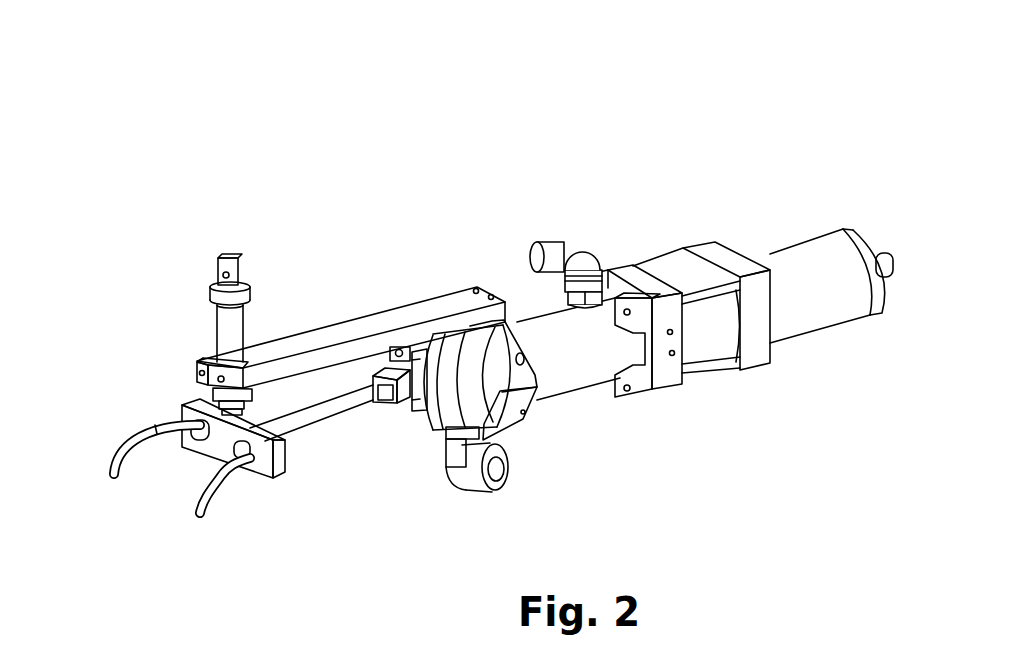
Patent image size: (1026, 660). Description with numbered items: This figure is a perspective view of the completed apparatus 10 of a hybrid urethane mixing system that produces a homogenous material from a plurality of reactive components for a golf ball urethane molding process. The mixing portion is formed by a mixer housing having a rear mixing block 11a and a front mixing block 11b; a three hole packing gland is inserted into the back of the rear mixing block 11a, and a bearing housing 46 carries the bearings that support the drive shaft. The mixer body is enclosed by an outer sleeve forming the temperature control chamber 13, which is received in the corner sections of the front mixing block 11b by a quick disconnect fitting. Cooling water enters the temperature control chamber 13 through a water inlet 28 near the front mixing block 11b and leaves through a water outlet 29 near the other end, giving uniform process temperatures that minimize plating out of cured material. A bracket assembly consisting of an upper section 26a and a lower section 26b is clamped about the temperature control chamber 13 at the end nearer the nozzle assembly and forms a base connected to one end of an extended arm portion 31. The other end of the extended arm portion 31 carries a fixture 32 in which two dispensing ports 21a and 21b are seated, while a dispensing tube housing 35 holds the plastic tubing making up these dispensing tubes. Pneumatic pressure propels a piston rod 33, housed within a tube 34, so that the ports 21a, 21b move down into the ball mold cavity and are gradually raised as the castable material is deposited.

The apparatus 10 is at (374, 216).
The rear mixing block 11a is at (677, 384).
The front mixing block 11b is at (650, 391).
The temperature control chamber 13 is at (596, 388).
The dispensing port 21a is at (117, 451).
The dispensing port 21b is at (209, 507).
The upper section 26a is at (517, 328).
The lower section 26b is at (510, 438).
The water inlet 28 is at (557, 240).
The water outlet 29 is at (473, 490).
The extended arm portion 31 is at (366, 314).
The fixture 32 is at (186, 403).
The piston rod 33 is at (234, 256).
The tube 34 is at (216, 327).
The dispensing tube housing 35 is at (395, 420).
The bearing housing 46 is at (771, 356).